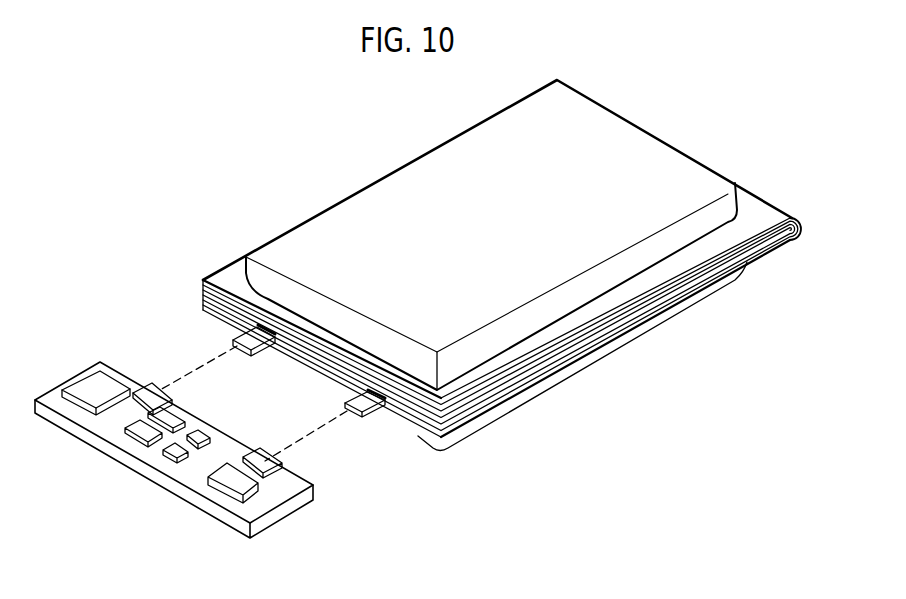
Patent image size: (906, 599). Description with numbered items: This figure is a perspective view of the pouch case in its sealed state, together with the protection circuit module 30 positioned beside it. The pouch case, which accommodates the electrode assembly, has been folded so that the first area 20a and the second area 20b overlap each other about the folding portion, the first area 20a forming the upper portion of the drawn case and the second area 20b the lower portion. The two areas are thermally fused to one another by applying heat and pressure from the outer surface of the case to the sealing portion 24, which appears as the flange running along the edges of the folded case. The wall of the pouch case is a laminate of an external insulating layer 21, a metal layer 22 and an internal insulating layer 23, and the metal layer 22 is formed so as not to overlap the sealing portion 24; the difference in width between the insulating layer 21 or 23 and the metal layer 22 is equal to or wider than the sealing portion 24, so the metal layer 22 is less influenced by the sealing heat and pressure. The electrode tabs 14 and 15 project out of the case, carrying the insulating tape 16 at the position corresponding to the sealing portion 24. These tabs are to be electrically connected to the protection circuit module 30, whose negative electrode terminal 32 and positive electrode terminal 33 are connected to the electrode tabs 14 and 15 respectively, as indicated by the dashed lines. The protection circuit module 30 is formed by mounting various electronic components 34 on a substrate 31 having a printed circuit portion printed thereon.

The electrode tab 14 is at (240, 336).
The electrode tab 15 is at (356, 414).
The insulating tape 16 is at (372, 393).
The first area 20a is at (443, 167).
The second area 20b is at (617, 343).
The external insulating layer 21 is at (441, 438).
The metal layer 22 is at (403, 425).
The internal insulating layer 23 is at (419, 427).
The sealing portion 24 is at (500, 366).
The protection circuit module 30 is at (80, 365).
The substrate 31 is at (133, 466).
The negative electrode terminal 32 is at (148, 392).
The positive electrode terminal 33 is at (283, 470).
The electronic component 34 is at (165, 450).